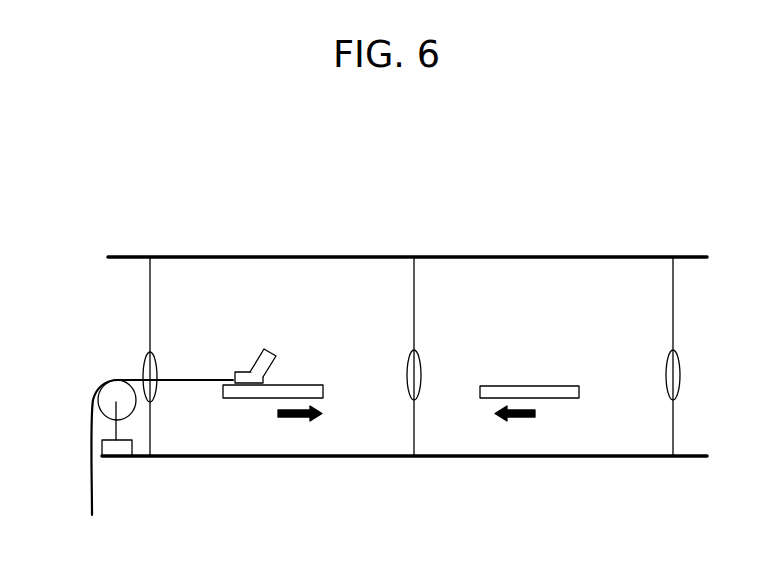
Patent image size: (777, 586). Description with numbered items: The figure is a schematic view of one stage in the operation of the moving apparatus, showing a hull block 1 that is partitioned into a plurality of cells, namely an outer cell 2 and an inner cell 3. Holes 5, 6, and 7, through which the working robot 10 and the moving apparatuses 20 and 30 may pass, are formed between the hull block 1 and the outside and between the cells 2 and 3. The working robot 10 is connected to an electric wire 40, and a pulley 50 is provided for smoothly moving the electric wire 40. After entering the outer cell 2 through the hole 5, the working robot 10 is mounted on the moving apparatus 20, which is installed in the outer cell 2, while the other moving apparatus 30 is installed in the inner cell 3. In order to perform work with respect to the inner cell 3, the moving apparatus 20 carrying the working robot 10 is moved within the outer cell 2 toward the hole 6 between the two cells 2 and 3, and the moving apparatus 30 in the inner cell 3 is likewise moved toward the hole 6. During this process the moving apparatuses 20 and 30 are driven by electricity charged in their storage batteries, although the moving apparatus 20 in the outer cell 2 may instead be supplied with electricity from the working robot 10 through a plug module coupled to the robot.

The hull block 1 is at (633, 460).
The outer cell 2 is at (312, 287).
The inner cell 3 is at (512, 287).
The hole 5 is at (152, 356).
The hole 6 is at (415, 362).
The hole 7 is at (676, 363).
The working robot 10 is at (242, 372).
The moving apparatus 20 is at (242, 398).
The moving apparatus 30 is at (560, 398).
The electric wire 40 is at (90, 485).
The pulley 50 is at (100, 393).